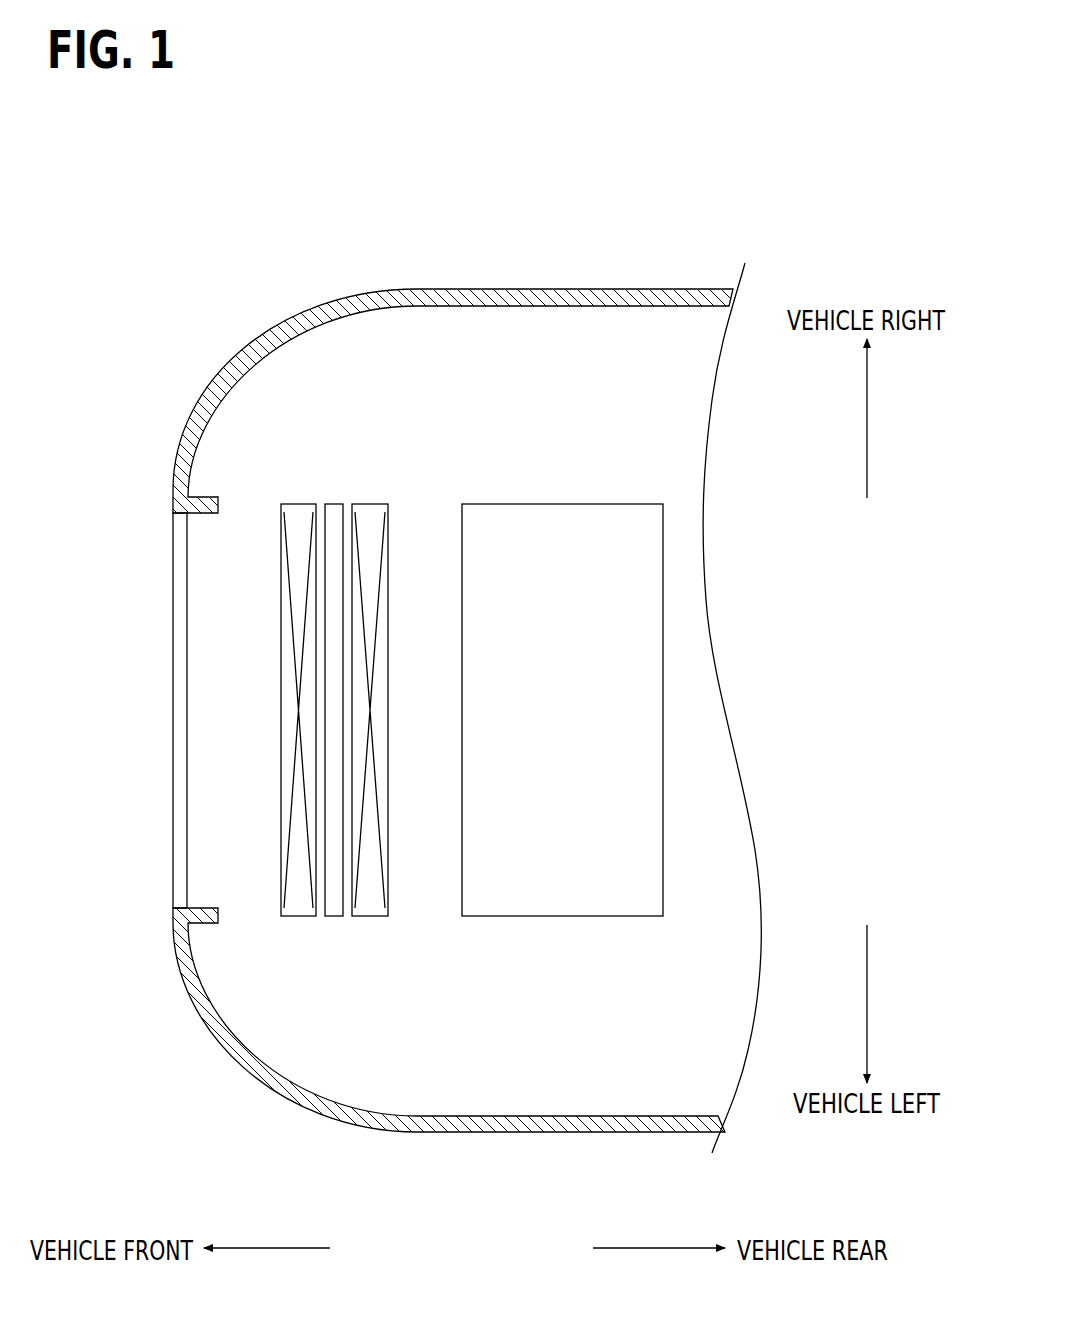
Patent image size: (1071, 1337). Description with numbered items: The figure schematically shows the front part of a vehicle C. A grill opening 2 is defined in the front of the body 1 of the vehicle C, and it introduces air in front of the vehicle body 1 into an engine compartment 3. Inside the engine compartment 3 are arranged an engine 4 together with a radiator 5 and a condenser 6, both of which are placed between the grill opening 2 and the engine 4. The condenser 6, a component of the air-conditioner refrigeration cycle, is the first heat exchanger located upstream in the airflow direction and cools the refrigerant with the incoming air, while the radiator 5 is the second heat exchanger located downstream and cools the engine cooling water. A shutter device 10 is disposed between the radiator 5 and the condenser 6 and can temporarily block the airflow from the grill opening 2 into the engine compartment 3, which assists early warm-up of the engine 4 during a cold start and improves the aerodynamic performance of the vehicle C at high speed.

The body 1 is at (467, 289).
The grill opening 2 is at (176, 528).
The engine compartment 3 is at (538, 412).
The engine 4 is at (577, 503).
The radiator 5 is at (365, 503).
The condenser 6 is at (298, 503).
The shutter device 10 is at (334, 503).
The vehicle C is at (655, 224).